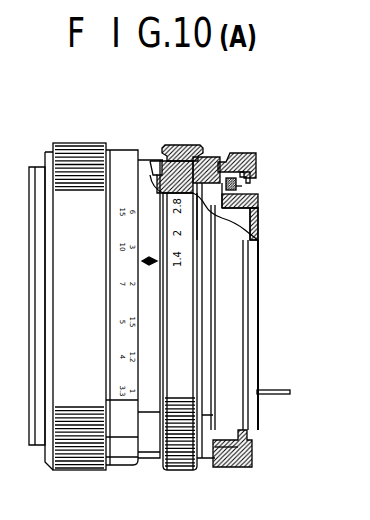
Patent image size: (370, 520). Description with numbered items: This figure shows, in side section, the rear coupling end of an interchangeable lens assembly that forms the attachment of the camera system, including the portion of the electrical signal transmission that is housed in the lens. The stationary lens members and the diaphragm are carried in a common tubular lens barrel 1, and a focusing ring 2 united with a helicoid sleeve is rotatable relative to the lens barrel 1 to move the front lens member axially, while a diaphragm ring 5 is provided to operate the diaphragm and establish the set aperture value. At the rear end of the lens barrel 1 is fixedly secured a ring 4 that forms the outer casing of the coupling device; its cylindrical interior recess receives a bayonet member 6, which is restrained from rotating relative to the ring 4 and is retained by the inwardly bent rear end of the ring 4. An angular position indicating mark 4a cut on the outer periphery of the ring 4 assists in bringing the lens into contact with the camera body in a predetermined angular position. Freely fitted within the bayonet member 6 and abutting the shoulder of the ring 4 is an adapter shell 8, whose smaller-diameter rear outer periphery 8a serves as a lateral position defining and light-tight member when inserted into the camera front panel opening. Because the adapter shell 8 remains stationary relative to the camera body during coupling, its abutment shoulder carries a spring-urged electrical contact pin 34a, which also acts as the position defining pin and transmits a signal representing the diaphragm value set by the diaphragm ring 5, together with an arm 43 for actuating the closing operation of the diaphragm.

The lens barrel 1 is at (156, 164).
The focusing ring 2 is at (80, 162).
The ring 4 is at (210, 157).
The angular position indicating mark 4a is at (235, 160).
The diaphragm ring 5 is at (191, 145).
The bayonet member 6 is at (249, 177).
The electrical contact pin 34a is at (241, 187).
The outer periphery 8a is at (253, 195).
The adapter shell 8 is at (259, 210).
The arm 43 is at (288, 390).